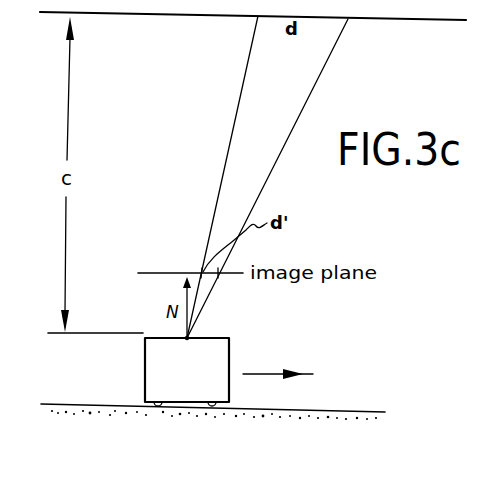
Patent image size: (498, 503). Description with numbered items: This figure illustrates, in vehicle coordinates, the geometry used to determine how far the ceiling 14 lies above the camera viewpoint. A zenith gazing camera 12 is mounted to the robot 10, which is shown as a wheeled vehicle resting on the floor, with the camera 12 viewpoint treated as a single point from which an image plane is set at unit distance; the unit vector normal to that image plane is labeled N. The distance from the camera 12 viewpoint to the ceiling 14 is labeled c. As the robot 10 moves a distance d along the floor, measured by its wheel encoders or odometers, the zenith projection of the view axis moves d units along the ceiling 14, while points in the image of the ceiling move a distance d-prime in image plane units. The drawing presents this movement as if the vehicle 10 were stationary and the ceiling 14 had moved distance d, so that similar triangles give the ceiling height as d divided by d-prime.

The robot 10 is at (145, 372).
The camera 12 is at (187, 338).
The ceiling 14 is at (166, 16).